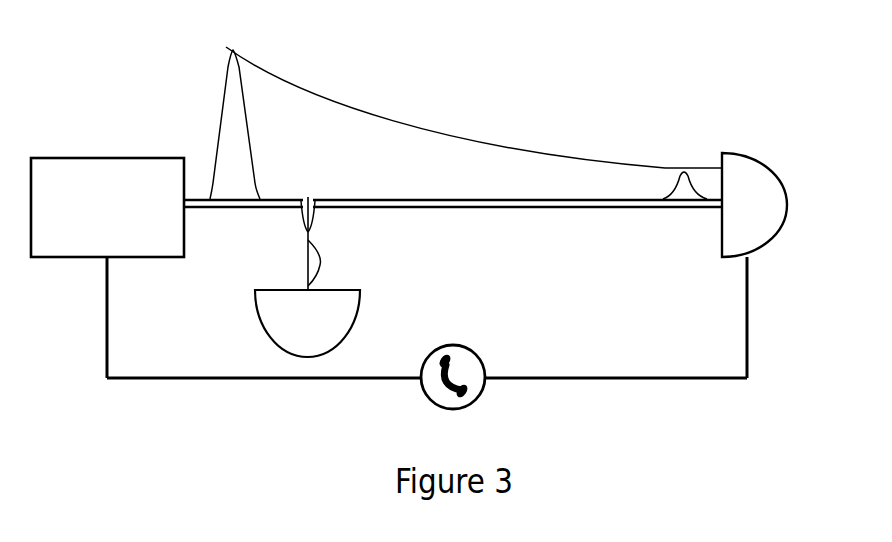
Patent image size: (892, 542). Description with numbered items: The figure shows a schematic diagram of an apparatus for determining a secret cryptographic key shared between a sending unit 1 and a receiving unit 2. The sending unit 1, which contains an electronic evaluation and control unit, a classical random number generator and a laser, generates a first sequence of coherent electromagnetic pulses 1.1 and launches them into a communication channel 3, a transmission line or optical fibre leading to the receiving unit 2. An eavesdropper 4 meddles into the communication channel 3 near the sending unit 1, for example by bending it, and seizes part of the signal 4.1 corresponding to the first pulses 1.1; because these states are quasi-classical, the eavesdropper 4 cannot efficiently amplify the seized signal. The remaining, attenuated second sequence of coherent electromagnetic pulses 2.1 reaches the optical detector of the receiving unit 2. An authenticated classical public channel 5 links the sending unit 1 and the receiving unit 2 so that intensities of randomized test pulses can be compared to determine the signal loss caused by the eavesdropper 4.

The sending unit 1 is at (104, 181).
The first sequence of coherent electromagnetic pulses 1.1 is at (235, 137).
The receiving unit 2 is at (773, 178).
The second sequence of coherent electromagnetic pulses 2.1 is at (675, 182).
The communication channel 3 is at (510, 200).
The eavesdropper 4 is at (275, 298).
The seized signal part 4.1 is at (313, 258).
The authenticated classical public channel 5 is at (550, 373).